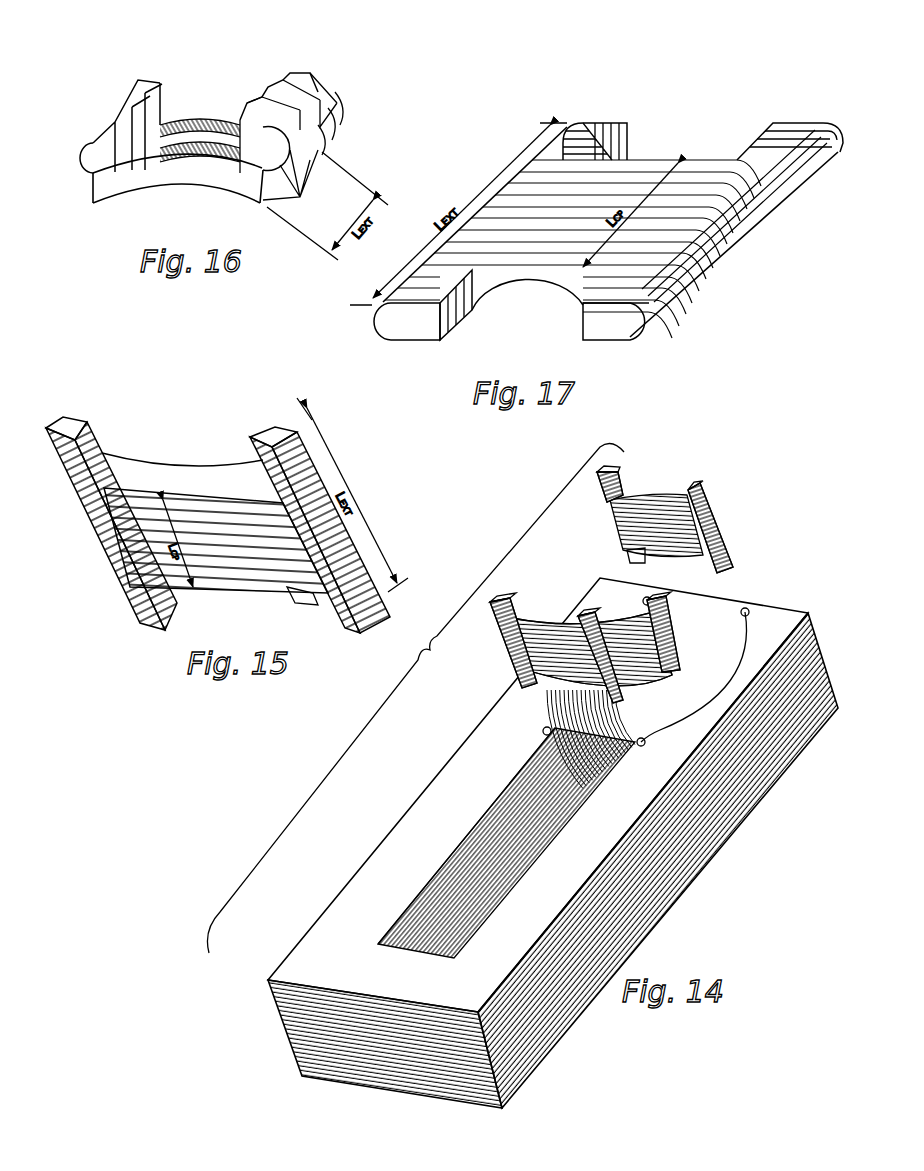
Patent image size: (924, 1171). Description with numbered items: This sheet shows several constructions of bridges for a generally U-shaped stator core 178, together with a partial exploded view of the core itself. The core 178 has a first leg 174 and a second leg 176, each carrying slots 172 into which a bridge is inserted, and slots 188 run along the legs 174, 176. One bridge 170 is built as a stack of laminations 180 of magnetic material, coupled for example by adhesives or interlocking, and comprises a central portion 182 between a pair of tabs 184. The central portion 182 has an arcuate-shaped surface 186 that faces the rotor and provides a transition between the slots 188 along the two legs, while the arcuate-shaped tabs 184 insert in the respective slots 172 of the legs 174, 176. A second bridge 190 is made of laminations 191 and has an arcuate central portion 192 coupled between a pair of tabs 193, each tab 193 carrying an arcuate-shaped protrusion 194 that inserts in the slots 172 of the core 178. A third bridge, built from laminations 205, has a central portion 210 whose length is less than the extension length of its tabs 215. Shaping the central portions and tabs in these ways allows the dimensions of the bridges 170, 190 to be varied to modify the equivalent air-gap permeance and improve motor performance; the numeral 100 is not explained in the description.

In FIG. 17, the laminated core plate 100 is at (468, 153).
In FIG. 14, the bridge 170 is at (503, 638).
In FIG. 15, the bridge 170 is at (110, 557).
In FIG. 14, the slots 172 is at (743, 612).
In FIG. 14, the first leg 174 is at (470, 814).
In FIG. 14, the second leg 176 is at (562, 876).
In FIG. 14, the core 178 is at (278, 1018).
In FIG. 15, the laminations 180 is at (280, 577).
In FIG. 15, the central portion 182 is at (190, 483).
In FIG. 15, the tabs 184 is at (60, 423).
In FIG. 15, the arcuate-shaped surface 186 is at (200, 463).
In FIG. 14, the slots 188 is at (648, 677).
In FIG. 16, the bridge 190 is at (105, 38).
In FIG. 16, the laminations 191 is at (302, 197).
In FIG. 16, the central portion 192 is at (202, 120).
In FIG. 16, the tabs 193 is at (150, 75).
In FIG. 16, the protrusion 194 is at (77, 163).
In FIG. 17, the laminations 205 is at (723, 240).
In FIG. 17, the central portion 210 is at (627, 175).
In FIG. 17, the tabs 215 is at (757, 155).